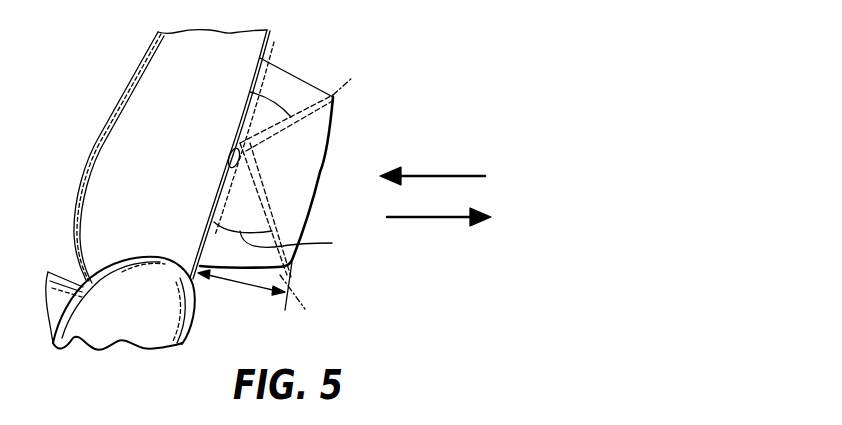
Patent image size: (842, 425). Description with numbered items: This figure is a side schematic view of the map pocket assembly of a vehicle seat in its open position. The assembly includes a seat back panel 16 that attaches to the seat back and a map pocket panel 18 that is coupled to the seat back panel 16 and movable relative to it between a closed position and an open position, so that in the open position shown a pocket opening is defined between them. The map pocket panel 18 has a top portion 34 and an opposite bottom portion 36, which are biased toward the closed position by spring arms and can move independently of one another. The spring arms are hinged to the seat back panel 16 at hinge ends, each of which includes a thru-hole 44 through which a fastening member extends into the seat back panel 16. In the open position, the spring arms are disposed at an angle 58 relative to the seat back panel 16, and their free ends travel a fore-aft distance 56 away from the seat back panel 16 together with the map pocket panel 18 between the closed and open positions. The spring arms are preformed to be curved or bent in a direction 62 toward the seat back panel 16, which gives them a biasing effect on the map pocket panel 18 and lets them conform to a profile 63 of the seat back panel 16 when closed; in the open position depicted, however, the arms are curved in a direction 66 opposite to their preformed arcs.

The seat back panel 16 is at (265, 40).
The map pocket panel 18 is at (326, 160).
The top portion 34 is at (334, 98).
The bottom portion 36 is at (292, 264).
The thru-hole 44 is at (205, 222).
The fore-aft distance 56 is at (248, 289).
The angle 58 is at (278, 97).
The direction 62 is at (437, 175).
The profile 63 is at (226, 168).
The direction 66 is at (437, 217).